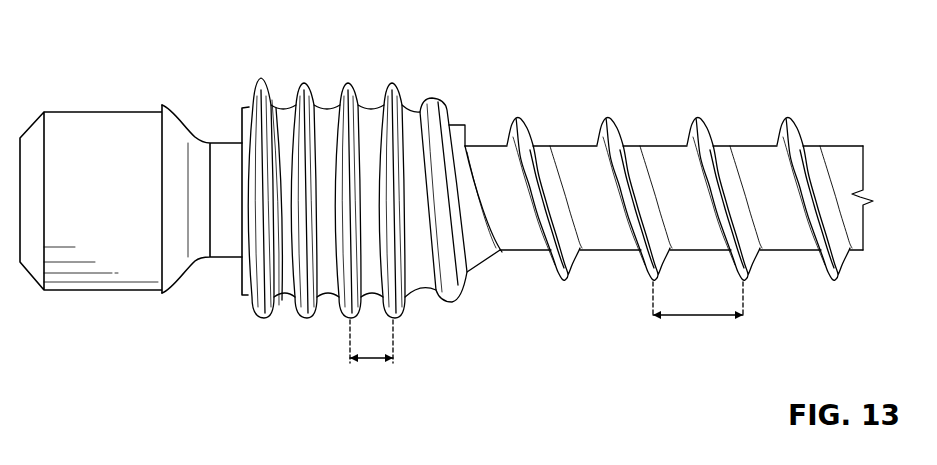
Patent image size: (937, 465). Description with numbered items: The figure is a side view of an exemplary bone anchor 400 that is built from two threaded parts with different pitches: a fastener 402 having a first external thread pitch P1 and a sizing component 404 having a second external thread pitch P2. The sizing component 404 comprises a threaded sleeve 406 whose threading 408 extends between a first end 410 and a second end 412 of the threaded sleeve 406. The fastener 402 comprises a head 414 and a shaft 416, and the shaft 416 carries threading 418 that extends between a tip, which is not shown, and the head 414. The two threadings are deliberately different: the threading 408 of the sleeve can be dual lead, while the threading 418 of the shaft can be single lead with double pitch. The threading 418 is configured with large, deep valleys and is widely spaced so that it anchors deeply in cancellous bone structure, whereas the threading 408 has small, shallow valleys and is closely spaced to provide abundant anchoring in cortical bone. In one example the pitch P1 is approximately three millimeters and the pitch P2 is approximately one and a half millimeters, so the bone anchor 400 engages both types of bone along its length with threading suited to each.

The bone anchor 400 is at (617, 51).
The fastener 402 is at (654, 145).
The sizing component 404 is at (336, 98).
The threaded sleeve 406 is at (258, 227).
The threading 408 is at (261, 76).
The first end 410 is at (243, 112).
The second end 412 is at (467, 125).
The head 414 is at (118, 272).
The shaft 416 is at (523, 247).
The threading 418 is at (785, 116).
The first external thread pitch P1 is at (698, 318).
The second external thread pitch P2 is at (372, 359).